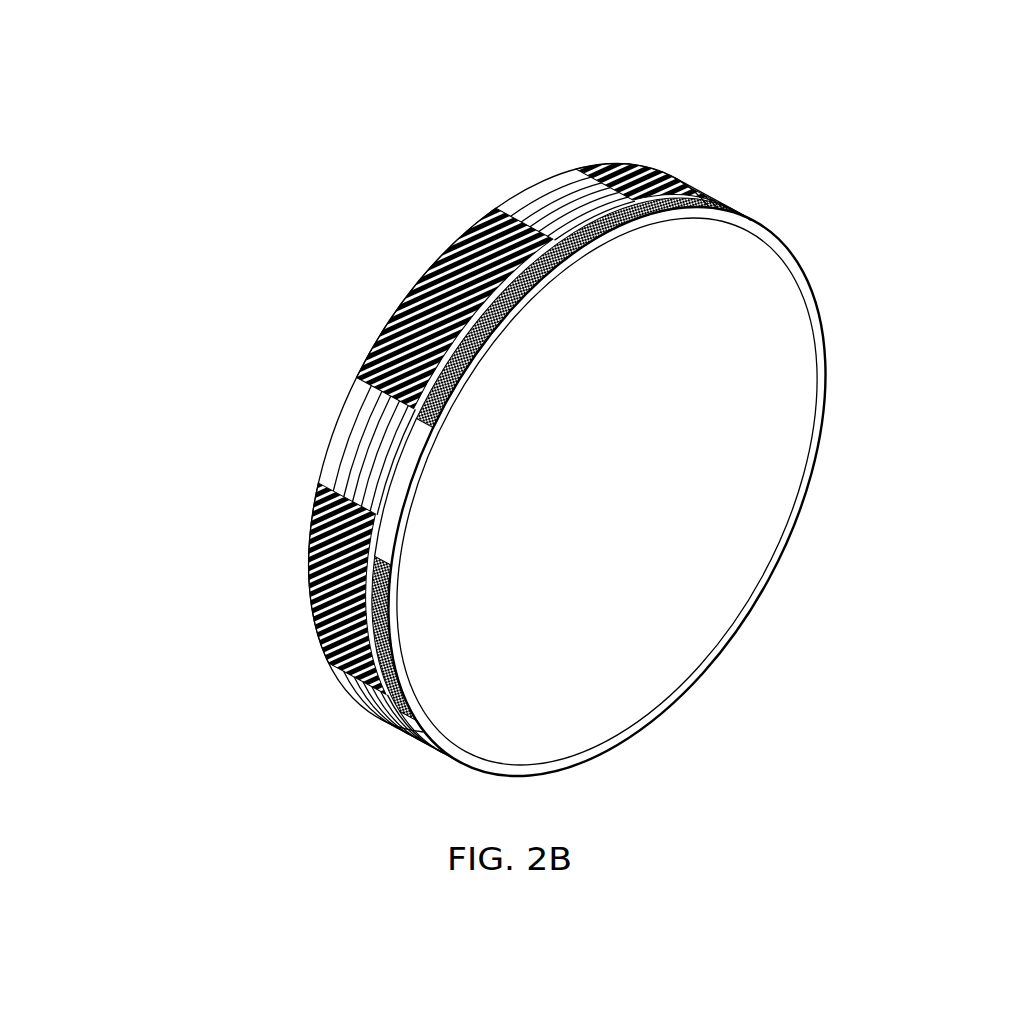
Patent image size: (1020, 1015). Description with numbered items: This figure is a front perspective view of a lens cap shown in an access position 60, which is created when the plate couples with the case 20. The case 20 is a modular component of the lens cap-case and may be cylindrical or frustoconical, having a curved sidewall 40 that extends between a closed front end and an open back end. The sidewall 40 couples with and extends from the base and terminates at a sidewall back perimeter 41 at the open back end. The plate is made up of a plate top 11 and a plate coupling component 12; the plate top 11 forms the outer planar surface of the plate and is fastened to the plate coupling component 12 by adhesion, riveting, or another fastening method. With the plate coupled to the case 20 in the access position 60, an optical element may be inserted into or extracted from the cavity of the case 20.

The access position 60 is at (606, 432).
The plate top 11 is at (572, 509).
The sidewall back perimeter 41 is at (390, 415).
The sidewall 40 is at (493, 405).
The case 20 is at (382, 413).
The plate coupling component 12 is at (440, 437).